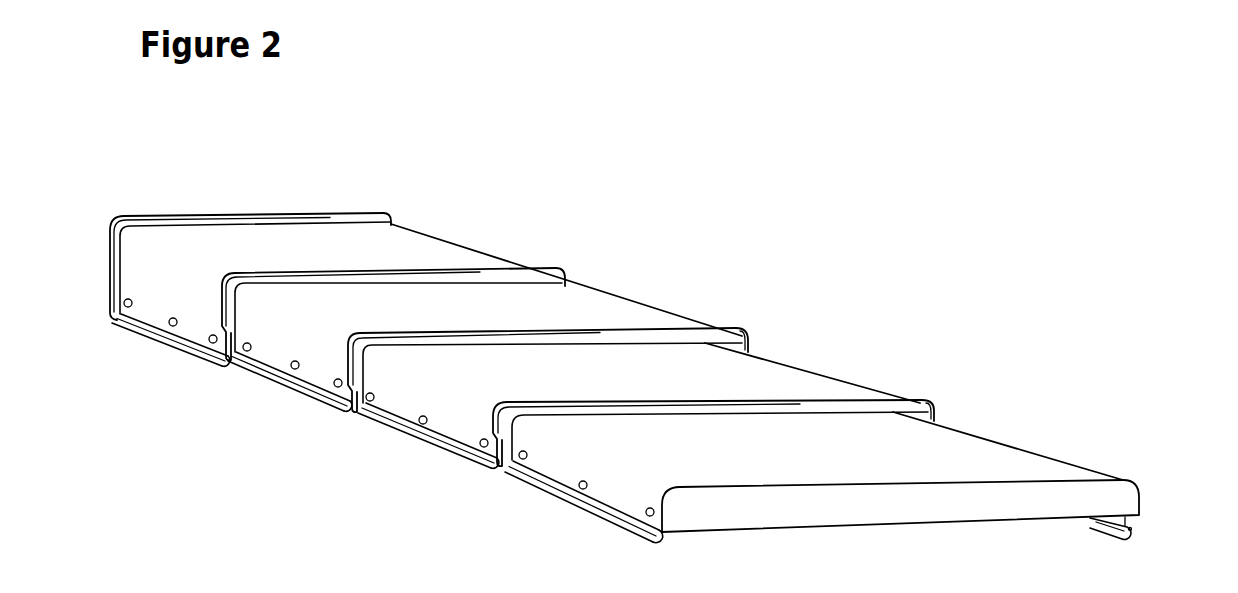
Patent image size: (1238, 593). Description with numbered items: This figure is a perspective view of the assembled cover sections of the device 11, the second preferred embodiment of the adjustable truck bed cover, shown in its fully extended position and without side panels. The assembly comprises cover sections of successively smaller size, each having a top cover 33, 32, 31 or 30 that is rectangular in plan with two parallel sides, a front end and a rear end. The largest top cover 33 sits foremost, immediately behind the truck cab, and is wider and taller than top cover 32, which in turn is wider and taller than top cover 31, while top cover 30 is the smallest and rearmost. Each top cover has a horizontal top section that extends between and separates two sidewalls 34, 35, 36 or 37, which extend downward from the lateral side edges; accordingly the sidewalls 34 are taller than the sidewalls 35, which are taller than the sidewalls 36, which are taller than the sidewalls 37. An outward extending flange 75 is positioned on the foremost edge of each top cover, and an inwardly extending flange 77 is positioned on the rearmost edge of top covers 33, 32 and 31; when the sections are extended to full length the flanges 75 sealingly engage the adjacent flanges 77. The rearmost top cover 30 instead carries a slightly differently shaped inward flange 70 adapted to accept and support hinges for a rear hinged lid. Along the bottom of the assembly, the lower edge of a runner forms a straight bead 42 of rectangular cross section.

The device for adjustably covering a truck cargo bed 11 is at (300, 163).
The top cover 30 is at (947, 457).
The top cover 31 is at (733, 380).
The top cover 32 is at (558, 305).
The top cover 33 is at (400, 246).
The top cover sidewalls 34 is at (167, 288).
The top cover sidewalls 35 is at (282, 333).
The top cover sidewalls 36 is at (410, 387).
The top cover sidewalls 37 is at (560, 457).
The bead 42 is at (1110, 528).
The inward flange 70 is at (1113, 498).
The outward extending flange 75 is at (333, 218).
The inwardly extending flange 77 is at (730, 340).